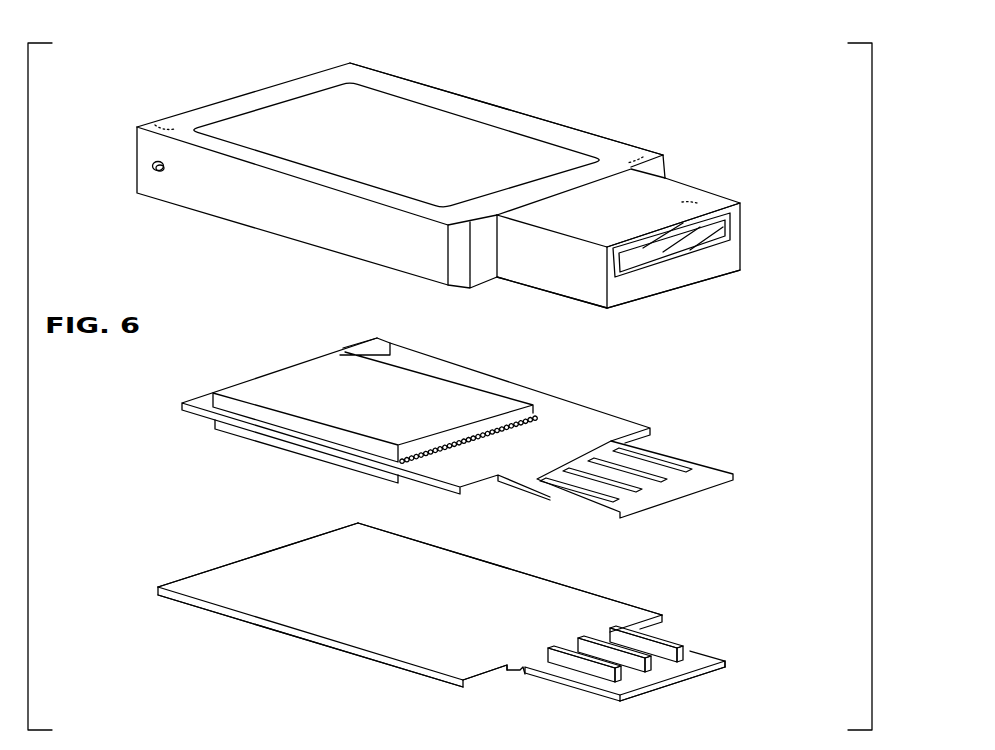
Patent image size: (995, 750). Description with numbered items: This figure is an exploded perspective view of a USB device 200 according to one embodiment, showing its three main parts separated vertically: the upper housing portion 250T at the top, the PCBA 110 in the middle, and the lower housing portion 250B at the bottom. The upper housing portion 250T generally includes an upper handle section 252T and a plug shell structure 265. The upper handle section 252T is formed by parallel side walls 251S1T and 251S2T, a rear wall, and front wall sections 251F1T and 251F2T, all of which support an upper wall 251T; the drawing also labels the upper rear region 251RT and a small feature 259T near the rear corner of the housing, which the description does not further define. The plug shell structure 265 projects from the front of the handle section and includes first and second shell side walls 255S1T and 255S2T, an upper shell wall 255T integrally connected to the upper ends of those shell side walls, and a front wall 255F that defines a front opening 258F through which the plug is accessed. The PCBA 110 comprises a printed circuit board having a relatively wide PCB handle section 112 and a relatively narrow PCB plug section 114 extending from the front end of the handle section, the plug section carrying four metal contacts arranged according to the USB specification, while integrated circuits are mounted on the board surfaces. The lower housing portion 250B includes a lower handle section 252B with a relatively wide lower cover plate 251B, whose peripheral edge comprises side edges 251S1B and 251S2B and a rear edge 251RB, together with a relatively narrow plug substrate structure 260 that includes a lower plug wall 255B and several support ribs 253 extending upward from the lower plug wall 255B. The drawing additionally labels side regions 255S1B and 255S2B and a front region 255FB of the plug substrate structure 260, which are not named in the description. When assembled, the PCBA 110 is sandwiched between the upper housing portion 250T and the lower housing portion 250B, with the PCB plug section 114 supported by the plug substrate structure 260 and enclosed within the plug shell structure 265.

The USB device 200 is at (786, 92).
The upper housing portion 250T is at (243, 76).
The upper wall 251T is at (258, 97).
The rear edge of top plate 251RT is at (165, 125).
The lanyard hole 259T is at (166, 171).
The side wall 251S1T is at (300, 230).
The front wall section 251F1T is at (488, 232).
The upper handle section 252T is at (509, 98).
The side wall 251S2T is at (643, 157).
The front wall section 251F2T is at (665, 168).
The upper shell wall 255T is at (718, 200).
The second shell side wall 255S2T is at (705, 205).
The first shell side wall 255S1T is at (530, 272).
The front wall 255F is at (720, 265).
The front opening 258F is at (718, 225).
The plug shell structure 265 is at (562, 305).
The PCBA 110 is at (242, 368).
The PCB handle section 112 is at (600, 400).
The PCB plug section 114 is at (676, 450).
The lower housing portion 250B is at (228, 534).
The lower cover plate 251B is at (485, 615).
The rear edge 251RB is at (273, 550).
The side edge 251S1B is at (347, 643).
The side edge 251S2B is at (510, 567).
The lower handle section 252B is at (639, 598).
The support ribs 253 is at (658, 641).
The lower plug wall 255B is at (617, 686).
The first side of bottom connector portion 255S1B is at (578, 683).
The second side of bottom connector portion 255S2B is at (698, 652).
The front of bottom connector portion 255FB is at (713, 670).
The plug substrate structure 260 is at (664, 692).